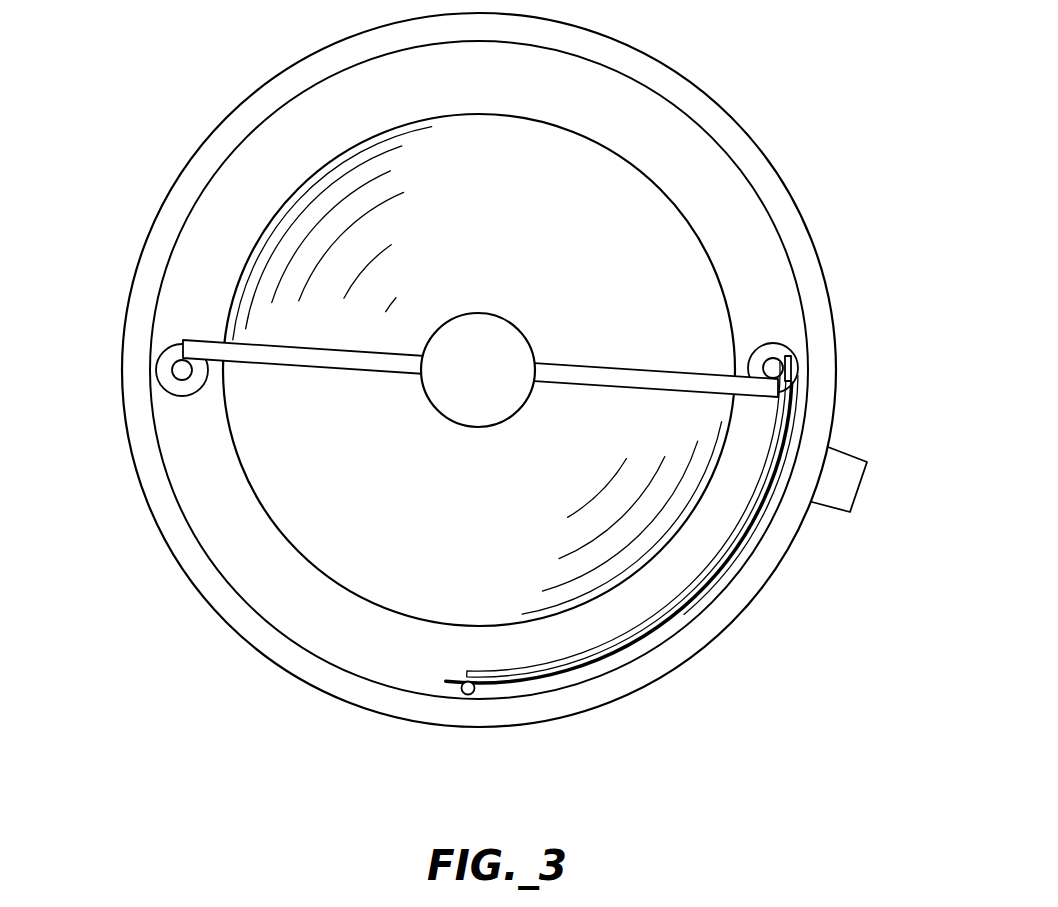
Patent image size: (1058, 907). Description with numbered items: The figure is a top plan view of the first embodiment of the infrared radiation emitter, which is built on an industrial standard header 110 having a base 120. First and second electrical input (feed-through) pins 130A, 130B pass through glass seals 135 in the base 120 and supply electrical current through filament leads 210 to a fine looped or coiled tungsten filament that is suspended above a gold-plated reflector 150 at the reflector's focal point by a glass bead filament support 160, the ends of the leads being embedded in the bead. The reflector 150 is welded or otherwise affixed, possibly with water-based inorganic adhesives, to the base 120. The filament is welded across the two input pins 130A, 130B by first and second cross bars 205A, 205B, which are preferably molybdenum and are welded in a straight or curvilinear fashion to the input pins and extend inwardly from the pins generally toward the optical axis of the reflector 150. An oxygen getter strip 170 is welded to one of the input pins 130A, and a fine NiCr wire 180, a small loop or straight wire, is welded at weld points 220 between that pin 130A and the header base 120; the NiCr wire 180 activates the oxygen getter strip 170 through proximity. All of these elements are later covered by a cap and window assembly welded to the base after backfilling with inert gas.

The header 110 is at (150, 210).
The base 120 is at (248, 120).
The first electrical input (feed-through) pin 130A is at (178, 370).
The second electrical input (feed-through) pin 130B is at (772, 345).
The glass seals in base 135 is at (177, 395).
The reflector 150 is at (535, 148).
The glass bead filament support 160 is at (470, 434).
The oxygen getter strip 170 is at (780, 468).
The NiCr wire 180 is at (750, 558).
The first cross bar 205A is at (395, 377).
The second cross bar 205B is at (640, 380).
The filament leads 210 is at (738, 215).
The weld points where NiCr wire is welded between one of the input pins and the head 220 is at (800, 367).